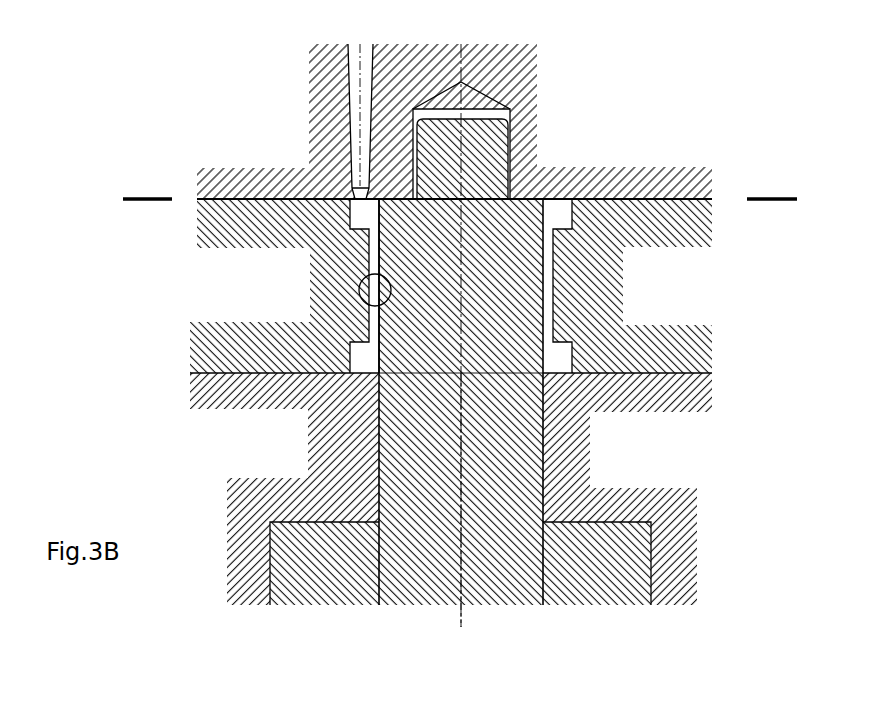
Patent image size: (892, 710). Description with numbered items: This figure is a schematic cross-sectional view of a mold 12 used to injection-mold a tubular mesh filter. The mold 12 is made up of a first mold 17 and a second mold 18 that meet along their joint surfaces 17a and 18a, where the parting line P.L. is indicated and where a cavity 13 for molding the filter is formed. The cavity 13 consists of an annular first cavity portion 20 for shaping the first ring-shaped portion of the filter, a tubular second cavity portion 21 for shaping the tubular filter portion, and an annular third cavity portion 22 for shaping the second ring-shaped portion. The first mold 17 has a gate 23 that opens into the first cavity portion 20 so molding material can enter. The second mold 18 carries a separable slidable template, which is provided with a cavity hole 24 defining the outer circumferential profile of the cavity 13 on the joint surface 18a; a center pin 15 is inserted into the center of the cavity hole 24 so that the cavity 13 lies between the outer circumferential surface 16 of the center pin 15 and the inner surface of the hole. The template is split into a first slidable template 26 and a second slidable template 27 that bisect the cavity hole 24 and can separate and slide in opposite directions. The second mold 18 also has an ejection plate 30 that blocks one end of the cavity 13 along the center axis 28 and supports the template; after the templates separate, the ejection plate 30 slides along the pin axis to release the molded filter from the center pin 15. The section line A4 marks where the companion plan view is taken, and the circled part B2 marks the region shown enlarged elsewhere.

The mold 12 is at (617, 130).
The cavity 13 is at (553, 210).
The center pin 15 is at (513, 420).
The outer circumferential surface 16 is at (383, 312).
The first mold 17 is at (226, 157).
The joint surface 17a is at (273, 200).
The second mold 18 is at (228, 232).
The joint surface 18a is at (248, 197).
The first cavity portion 20 is at (583, 230).
The second cavity portion 21 is at (558, 290).
The third cavity portion 22 is at (567, 353).
The gate 23 is at (350, 193).
The cavity hole 24 is at (357, 217).
The first slidable template 26 is at (256, 348).
The second slidable template 27 is at (645, 354).
The center axis 28 is at (460, 593).
The ejection plate 30 is at (333, 430).
The line A4- A4 is at (148, 197).
The part B2 is at (364, 276).
The parting line P.L. is at (617, 198).